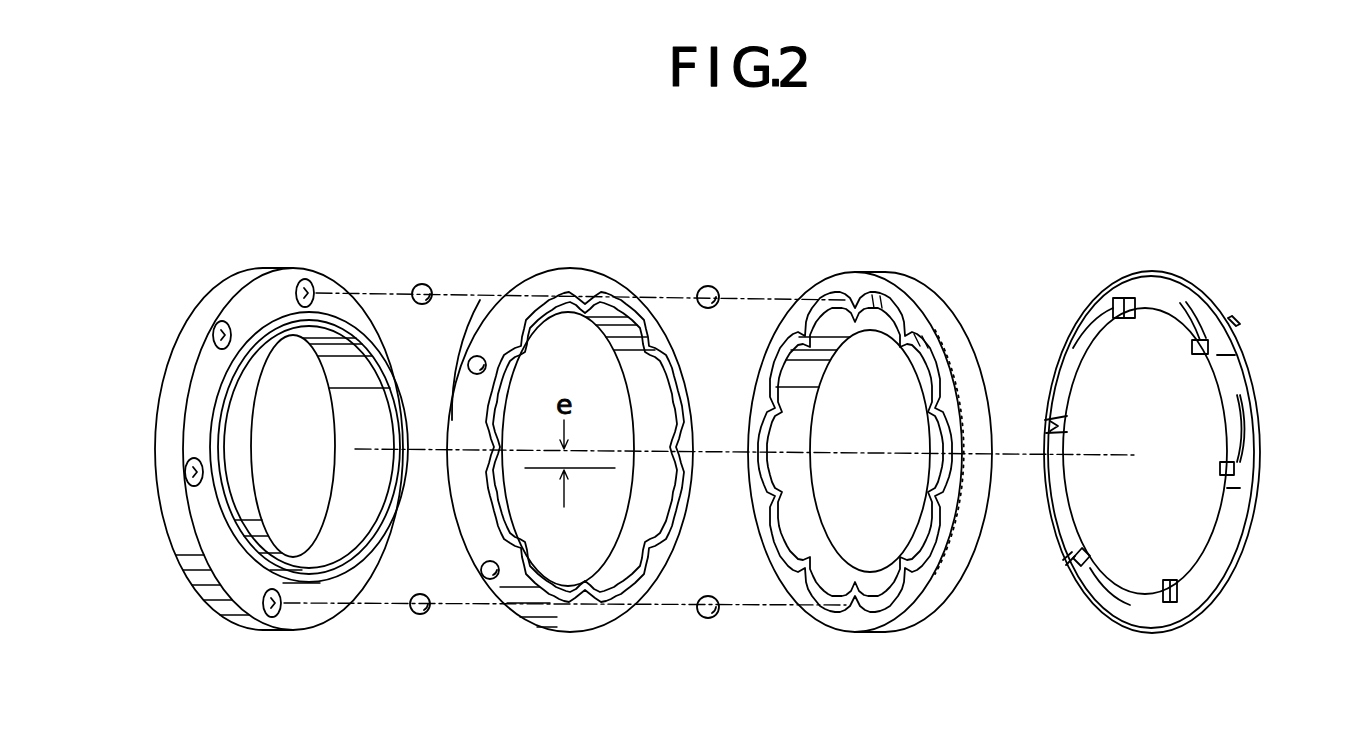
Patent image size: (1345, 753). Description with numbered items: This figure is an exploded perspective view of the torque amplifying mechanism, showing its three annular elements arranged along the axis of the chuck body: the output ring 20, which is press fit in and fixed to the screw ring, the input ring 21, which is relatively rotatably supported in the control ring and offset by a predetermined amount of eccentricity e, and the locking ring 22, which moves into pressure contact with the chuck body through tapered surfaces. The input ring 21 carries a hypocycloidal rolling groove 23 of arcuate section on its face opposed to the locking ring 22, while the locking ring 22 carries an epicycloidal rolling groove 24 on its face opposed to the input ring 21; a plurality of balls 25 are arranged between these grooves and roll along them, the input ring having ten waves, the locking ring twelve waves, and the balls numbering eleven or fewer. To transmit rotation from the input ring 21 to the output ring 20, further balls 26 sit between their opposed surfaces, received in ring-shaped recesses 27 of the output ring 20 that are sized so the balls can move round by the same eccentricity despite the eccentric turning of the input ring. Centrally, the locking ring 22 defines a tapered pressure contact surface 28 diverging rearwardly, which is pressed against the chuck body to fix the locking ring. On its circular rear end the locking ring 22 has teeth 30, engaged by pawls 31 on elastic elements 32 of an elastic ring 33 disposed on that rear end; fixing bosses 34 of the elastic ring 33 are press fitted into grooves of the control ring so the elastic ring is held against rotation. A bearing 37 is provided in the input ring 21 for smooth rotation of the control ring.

The output ring 20 is at (192, 333).
The input ring 21 is at (556, 268).
The locking ring 22 is at (932, 300).
The hypocycloidal rolling groove 23 is at (594, 608).
The epicycloidal rolling groove 24 is at (858, 610).
The balls 25 is at (717, 288).
The balls 26 is at (428, 284).
The recesses 27 is at (203, 486).
The tapered pressure contact surface 28 is at (805, 432).
The teeth 30 is at (992, 430).
The pawls 31 is at (1220, 470).
The elastic elements 32 is at (1227, 432).
The elastic ring 33 is at (1237, 365).
The fixing bosses 34 is at (1235, 322).
The bearing 37 is at (482, 355).